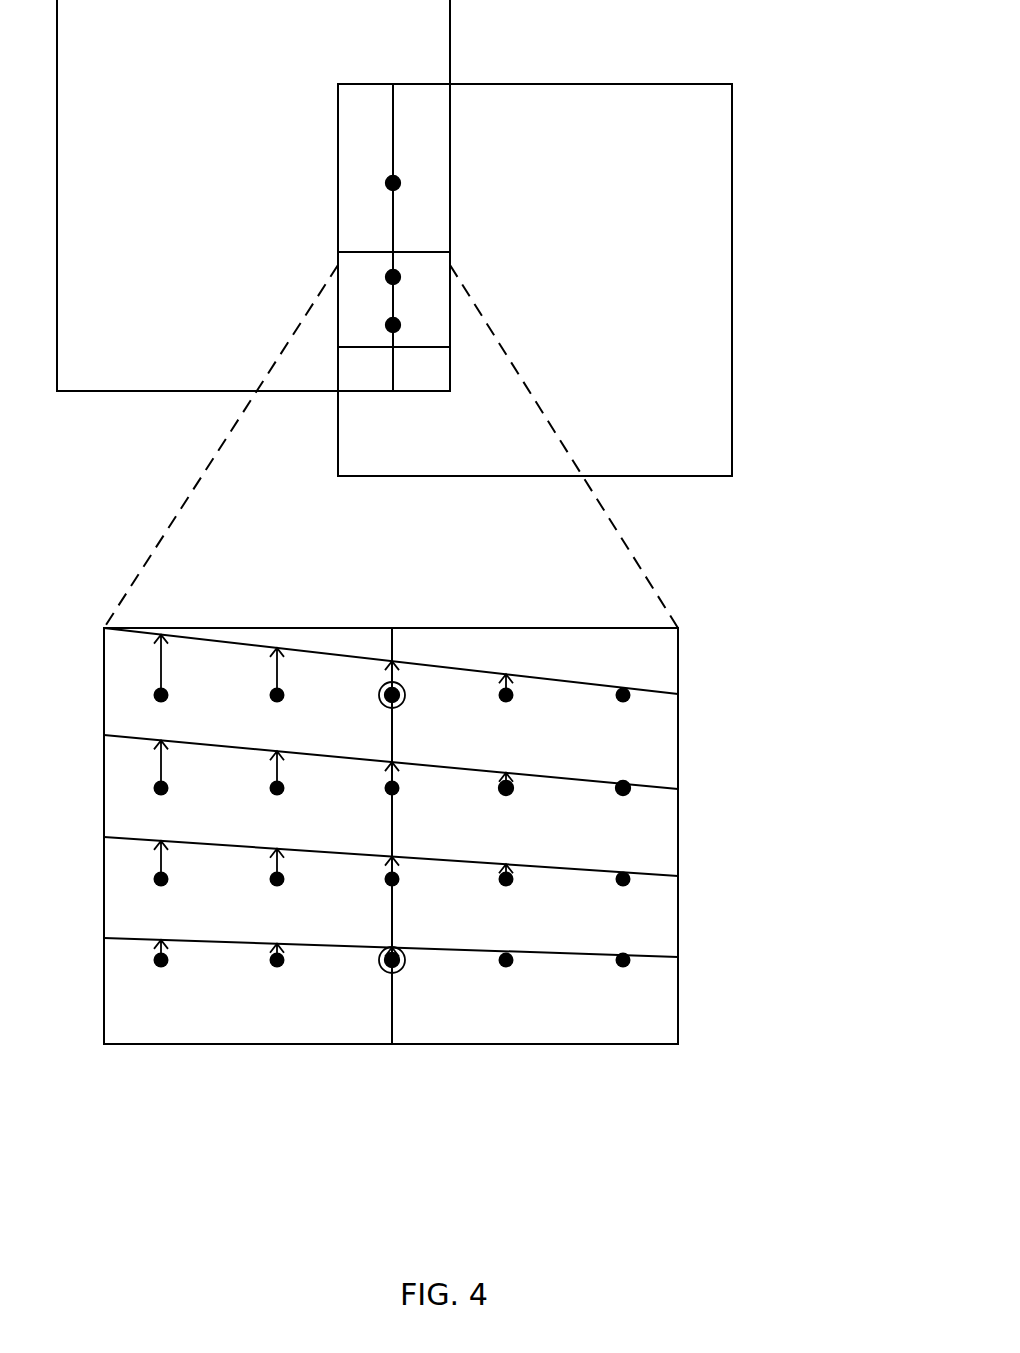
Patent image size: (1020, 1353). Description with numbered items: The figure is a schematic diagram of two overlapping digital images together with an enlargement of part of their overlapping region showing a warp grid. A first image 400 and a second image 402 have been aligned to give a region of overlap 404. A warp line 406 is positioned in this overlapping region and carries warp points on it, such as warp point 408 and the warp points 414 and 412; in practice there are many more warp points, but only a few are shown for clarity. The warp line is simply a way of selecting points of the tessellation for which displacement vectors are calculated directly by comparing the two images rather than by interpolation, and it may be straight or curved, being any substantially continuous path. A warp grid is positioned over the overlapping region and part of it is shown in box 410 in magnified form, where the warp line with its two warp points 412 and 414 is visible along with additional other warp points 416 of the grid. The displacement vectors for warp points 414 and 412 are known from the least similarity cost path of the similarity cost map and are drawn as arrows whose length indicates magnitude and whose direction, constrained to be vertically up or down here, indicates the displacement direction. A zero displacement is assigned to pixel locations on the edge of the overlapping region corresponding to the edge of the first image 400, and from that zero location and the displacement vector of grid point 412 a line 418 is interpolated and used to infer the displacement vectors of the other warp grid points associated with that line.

The first image 400 is at (112, 36).
The second image 402 is at (720, 119).
The region of overlap 404 is at (442, 100).
The warp line 406 is at (393, 110).
The warp point 408 is at (396, 178).
The box 410 is at (428, 277).
The warp point 412 is at (398, 322).
The warp point 414 is at (385, 272).
The warp points 416 is at (623, 795).
The interpolated line 418 is at (648, 783).